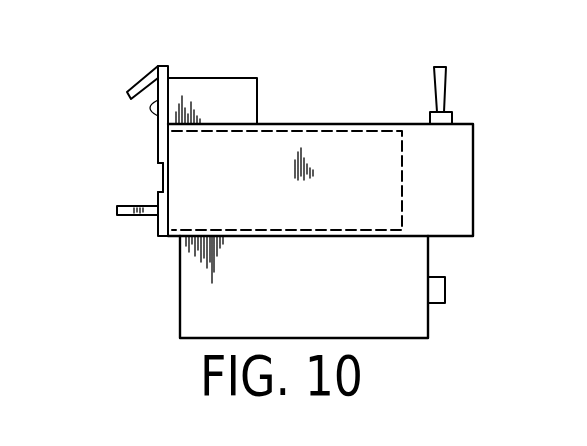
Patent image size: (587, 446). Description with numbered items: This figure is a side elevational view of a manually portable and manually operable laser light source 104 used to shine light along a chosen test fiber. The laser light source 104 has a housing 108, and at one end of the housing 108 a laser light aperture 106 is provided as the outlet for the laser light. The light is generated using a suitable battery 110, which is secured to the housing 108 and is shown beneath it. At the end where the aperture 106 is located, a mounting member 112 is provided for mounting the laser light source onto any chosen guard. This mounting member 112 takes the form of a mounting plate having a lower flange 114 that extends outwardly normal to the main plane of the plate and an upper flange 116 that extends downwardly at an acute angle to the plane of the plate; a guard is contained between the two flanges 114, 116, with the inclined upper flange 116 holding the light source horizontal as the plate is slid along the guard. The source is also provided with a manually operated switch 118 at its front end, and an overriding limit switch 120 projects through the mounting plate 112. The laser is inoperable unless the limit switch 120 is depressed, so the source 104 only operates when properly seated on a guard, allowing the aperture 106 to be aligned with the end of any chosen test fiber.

The laser light source 104 is at (363, 119).
The laser light aperture 106 is at (163, 182).
The housing 108 is at (453, 155).
The battery 110 is at (320, 300).
The mounting member 112 is at (158, 136).
The lower flange 114 is at (118, 216).
The upper flange 116 is at (142, 78).
The manually operated switch 118 is at (446, 80).
The overriding limit switch 120 is at (150, 108).